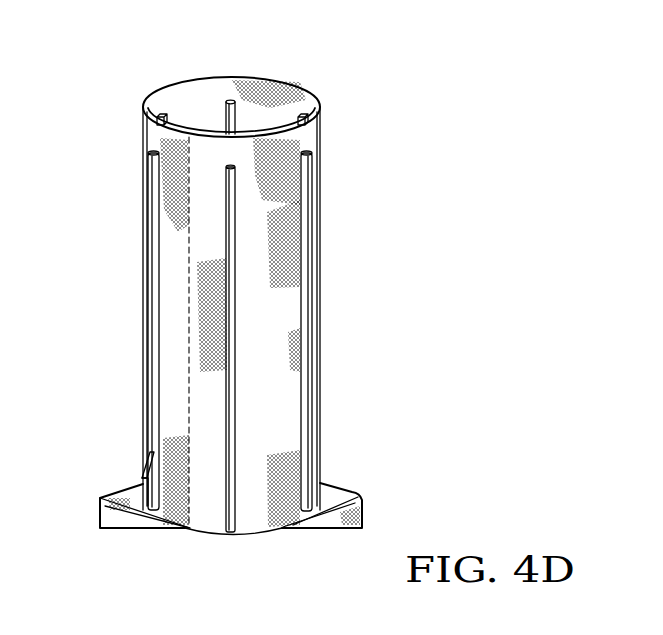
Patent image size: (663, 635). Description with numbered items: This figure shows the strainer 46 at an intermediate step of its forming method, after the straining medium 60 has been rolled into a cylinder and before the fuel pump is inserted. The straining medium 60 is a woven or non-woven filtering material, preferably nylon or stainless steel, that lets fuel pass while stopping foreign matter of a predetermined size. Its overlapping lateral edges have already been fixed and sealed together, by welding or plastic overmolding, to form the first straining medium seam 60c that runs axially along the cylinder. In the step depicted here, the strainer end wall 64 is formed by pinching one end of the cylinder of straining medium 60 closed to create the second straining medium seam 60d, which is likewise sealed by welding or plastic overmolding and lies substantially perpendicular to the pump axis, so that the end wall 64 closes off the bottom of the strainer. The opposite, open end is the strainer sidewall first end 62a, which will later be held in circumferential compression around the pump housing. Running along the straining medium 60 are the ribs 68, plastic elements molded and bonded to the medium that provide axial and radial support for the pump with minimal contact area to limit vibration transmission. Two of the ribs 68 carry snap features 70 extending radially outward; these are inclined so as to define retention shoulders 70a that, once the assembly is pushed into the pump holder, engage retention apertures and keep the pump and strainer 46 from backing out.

The strainer 46 is at (450, 110).
The straining medium 60 is at (247, 520).
The first straining medium seam 60c is at (192, 518).
The second straining medium seam 60d is at (137, 532).
The strainer sidewall first end 62a is at (312, 93).
The strainer end wall 64 is at (282, 530).
The ribs 68 is at (148, 153).
The snap features 70 is at (152, 455).
The retention shoulders 70a is at (147, 480).